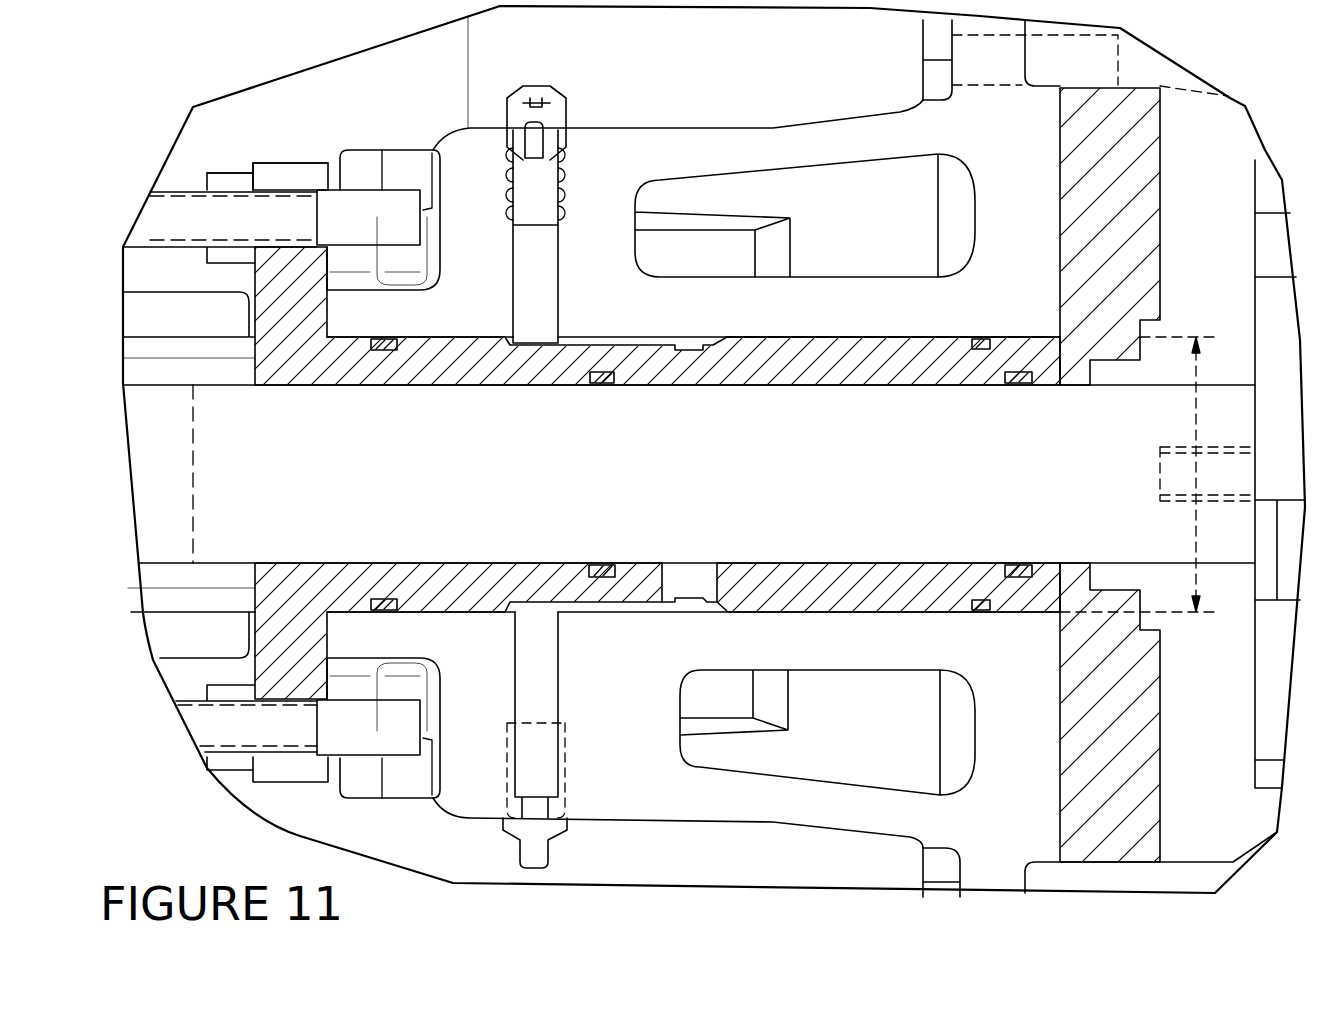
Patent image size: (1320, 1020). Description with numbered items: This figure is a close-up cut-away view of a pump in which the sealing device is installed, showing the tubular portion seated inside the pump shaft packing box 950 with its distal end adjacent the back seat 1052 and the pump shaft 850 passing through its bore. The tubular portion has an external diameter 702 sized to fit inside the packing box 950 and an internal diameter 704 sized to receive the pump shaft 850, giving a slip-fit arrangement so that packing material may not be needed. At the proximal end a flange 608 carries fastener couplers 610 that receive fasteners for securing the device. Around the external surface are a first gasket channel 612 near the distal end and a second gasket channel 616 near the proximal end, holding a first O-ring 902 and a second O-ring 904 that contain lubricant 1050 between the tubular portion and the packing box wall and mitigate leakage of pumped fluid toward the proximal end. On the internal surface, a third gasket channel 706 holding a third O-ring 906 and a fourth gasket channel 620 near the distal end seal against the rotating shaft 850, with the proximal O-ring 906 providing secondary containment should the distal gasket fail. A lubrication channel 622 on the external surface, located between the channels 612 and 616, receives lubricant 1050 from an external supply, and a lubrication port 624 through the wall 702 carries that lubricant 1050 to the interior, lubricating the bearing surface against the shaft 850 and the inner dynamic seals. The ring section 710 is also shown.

The flange 608 is at (280, 162).
The fastener couplers 610 is at (300, 185).
The pump shaft packing box 950 is at (479, 312).
The lubrication channel 622 is at (683, 337).
The second seal ring section 710 is at (757, 337).
The first O-ring 902 is at (980, 336).
The second O-ring 904 is at (377, 351).
The third O-ring 906 is at (605, 388).
The pump shaft 850 is at (680, 457).
The fourth gasket channel 620 is at (1013, 397).
The back seat 1052 is at (1080, 365).
The internal diameter 704 is at (190, 474).
The external diameter 702 is at (1157, 474).
The third gasket channel 706 is at (609, 554).
The second gasket channel 616 is at (400, 620).
The lubrication port 624 is at (697, 606).
The first gasket channel 612 is at (970, 616).
The lubricant 1050 is at (522, 703).